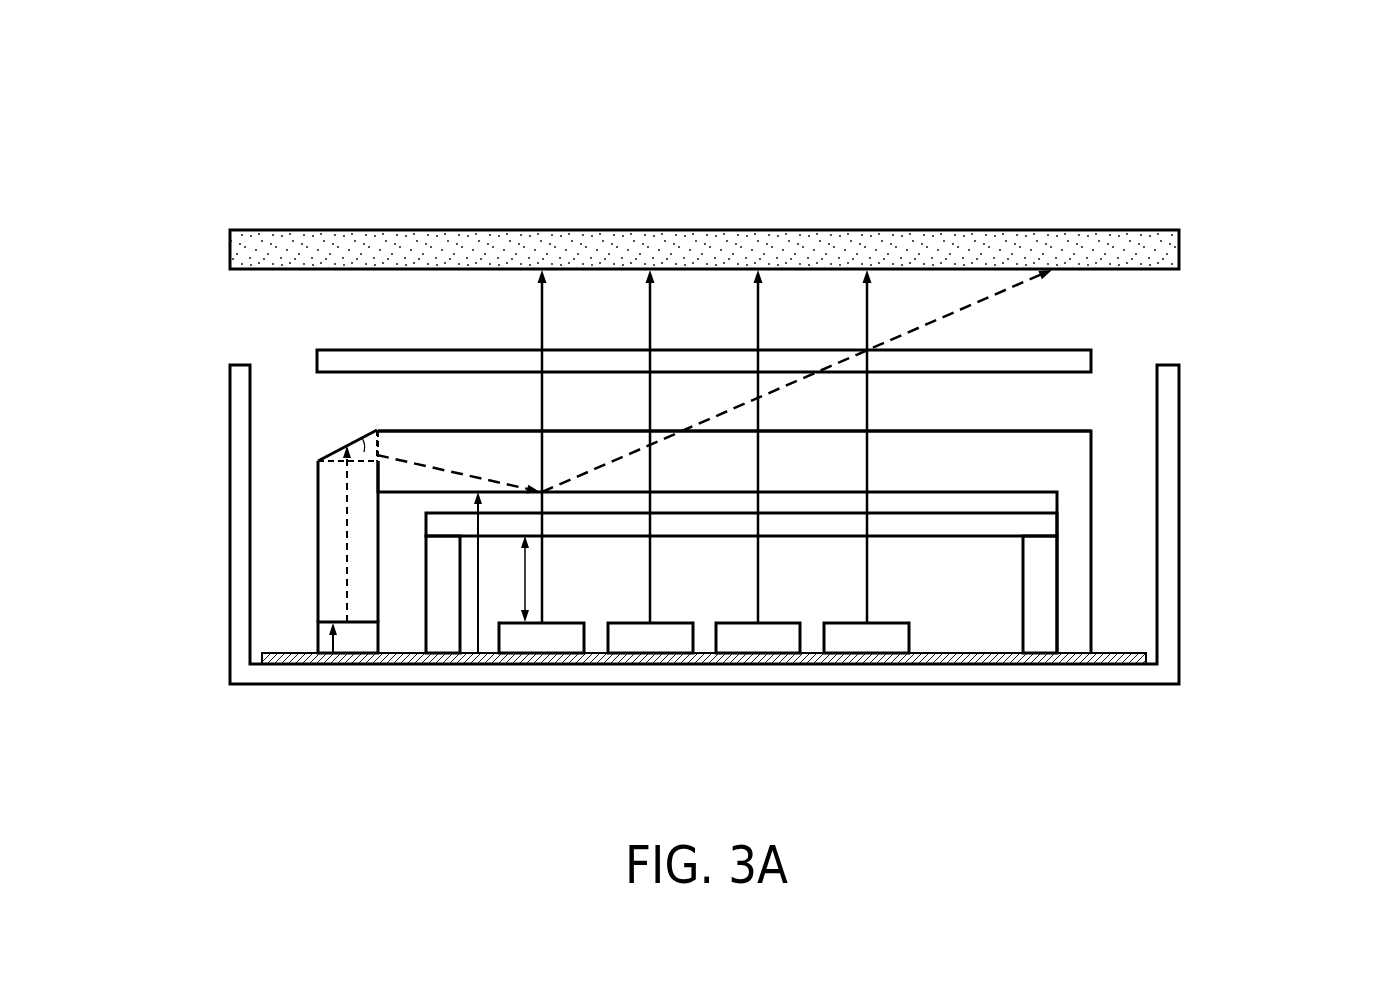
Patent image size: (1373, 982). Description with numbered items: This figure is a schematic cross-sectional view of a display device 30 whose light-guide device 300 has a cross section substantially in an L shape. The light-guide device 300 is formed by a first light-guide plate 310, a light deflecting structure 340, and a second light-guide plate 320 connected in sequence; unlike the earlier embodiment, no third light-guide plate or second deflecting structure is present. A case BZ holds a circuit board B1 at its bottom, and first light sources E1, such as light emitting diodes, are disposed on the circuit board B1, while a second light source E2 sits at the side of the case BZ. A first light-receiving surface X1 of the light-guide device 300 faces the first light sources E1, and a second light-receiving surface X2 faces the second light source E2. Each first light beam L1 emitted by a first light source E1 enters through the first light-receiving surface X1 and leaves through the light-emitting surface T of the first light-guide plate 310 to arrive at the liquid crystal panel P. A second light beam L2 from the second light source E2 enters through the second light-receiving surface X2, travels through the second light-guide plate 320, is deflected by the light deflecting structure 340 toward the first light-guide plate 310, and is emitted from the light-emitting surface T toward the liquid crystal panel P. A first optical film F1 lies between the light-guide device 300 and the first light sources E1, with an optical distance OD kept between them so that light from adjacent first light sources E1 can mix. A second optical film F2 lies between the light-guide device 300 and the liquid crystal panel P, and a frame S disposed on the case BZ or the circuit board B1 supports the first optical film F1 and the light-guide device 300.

The display device 30 is at (1250, 798).
The light-guide device 300 is at (1310, 42).
The first light-guide plate 310 is at (1025, 463).
The second light-guide plate 320 is at (330, 593).
The light deflecting structure 340 is at (330, 455).
The case BZ is at (1168, 527).
The circuit board B1 is at (767, 657).
The first light source E1 is at (673, 638).
The second light source E2 is at (362, 639).
The first optical film F1 is at (448, 522).
The second optical film F2 is at (343, 360).
The frame S is at (442, 638).
The liquid crystal panel P is at (258, 248).
The first light beam L1 is at (547, 590).
The second light beam L2 is at (1010, 288).
The optical distance OD is at (510, 579).
The first light-receiving surface X1 is at (478, 650).
The second light-receiving surface X2 is at (333, 652).
The light-emitting surface T is at (437, 424).